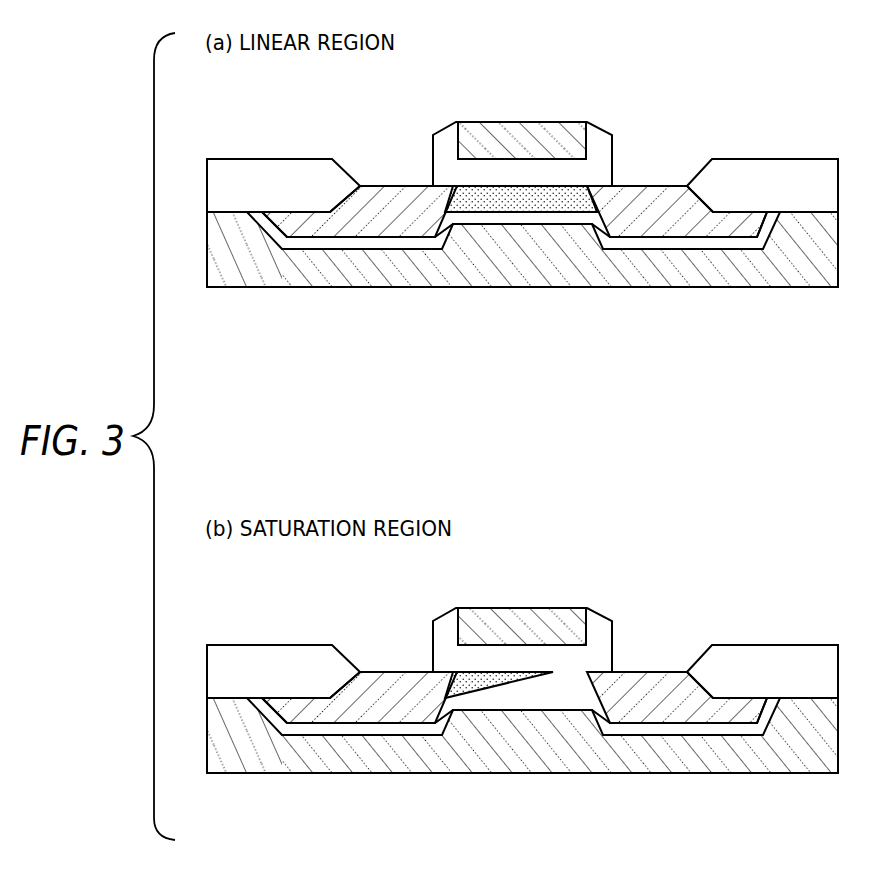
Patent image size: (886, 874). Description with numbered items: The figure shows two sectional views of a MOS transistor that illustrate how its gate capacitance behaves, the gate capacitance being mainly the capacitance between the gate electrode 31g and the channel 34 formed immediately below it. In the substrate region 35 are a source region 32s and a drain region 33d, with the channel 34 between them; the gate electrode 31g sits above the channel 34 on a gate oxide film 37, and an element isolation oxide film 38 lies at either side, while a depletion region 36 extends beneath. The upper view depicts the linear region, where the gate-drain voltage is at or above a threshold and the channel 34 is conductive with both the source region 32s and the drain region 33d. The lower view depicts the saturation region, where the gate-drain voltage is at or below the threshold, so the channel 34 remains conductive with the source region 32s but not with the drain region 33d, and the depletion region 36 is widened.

The gate electrode 31g is at (520, 122).
The source region 32s is at (390, 185).
The drain region 33d is at (654, 185).
The channel 34 is at (480, 198).
The substrate region 35 is at (672, 287).
The depletion region 36 is at (551, 218).
The gate oxide film 37 is at (603, 122).
The element isolation oxide film 38 is at (275, 159).